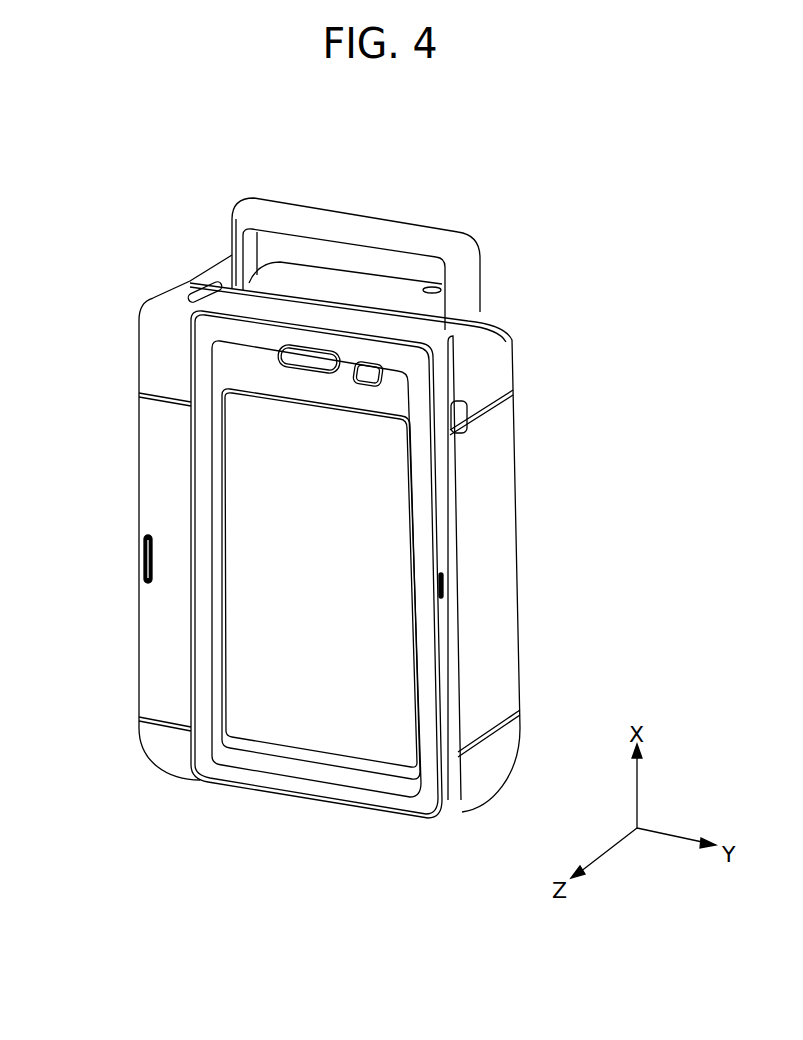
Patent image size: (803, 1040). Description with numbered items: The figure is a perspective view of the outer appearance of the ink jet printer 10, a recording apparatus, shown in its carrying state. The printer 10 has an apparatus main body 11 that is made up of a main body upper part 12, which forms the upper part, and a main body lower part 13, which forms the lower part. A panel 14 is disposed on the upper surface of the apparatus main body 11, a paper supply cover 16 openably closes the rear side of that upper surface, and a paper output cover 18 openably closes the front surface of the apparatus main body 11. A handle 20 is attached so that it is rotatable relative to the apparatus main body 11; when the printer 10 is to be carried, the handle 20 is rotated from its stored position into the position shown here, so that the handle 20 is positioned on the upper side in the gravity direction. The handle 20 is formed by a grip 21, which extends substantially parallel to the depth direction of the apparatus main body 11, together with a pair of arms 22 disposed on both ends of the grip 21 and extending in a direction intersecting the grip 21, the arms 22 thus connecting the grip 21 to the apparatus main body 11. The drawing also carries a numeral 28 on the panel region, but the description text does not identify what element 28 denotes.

The ink jet printer 10 is at (620, 432).
The apparatus main body 11 is at (355, 537).
The main body upper part 12 is at (163, 350).
The main body lower part 13 is at (497, 370).
The panel 14 is at (427, 555).
The paper supply cover 16 is at (153, 468).
The paper output cover 18 is at (505, 662).
The handle 20 is at (425, 211).
The grip 21 is at (341, 229).
The arms 22 is at (233, 232).
The display screen 28 is at (240, 712).